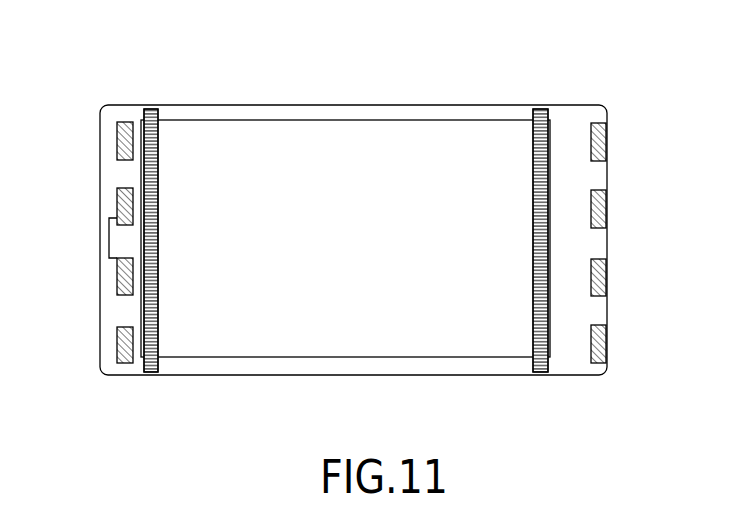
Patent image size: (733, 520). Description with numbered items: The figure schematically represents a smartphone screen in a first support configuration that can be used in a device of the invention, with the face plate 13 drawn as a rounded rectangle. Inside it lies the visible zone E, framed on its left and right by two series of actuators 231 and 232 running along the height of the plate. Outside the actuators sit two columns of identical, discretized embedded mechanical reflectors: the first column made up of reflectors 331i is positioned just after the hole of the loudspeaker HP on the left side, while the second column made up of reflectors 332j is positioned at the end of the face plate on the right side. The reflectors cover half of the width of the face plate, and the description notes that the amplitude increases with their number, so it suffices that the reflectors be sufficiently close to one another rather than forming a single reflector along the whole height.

The display panel substrate 13 is at (513, 116).
The visible zone E is at (415, 130).
The first series of actuators 231 is at (152, 372).
The second series of actuators 232 is at (541, 372).
The embedded mechanical reflectors of the first column 331i is at (117, 138).
The embedded mechanical reflectors of the second column 332j is at (607, 210).
The loudspeaker HP is at (110, 240).